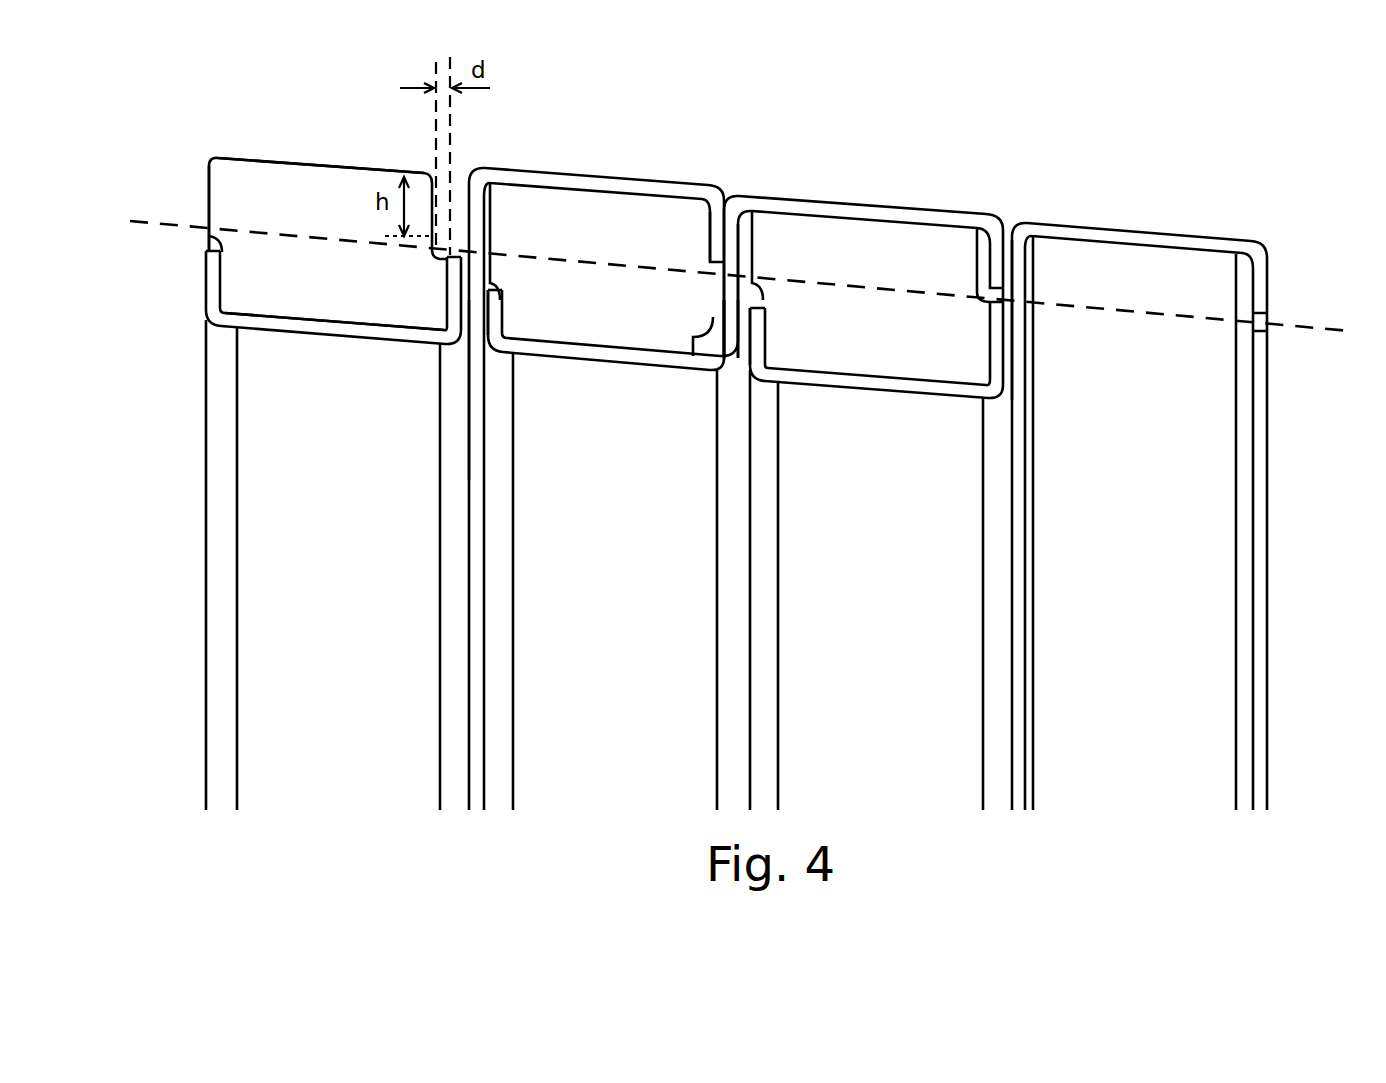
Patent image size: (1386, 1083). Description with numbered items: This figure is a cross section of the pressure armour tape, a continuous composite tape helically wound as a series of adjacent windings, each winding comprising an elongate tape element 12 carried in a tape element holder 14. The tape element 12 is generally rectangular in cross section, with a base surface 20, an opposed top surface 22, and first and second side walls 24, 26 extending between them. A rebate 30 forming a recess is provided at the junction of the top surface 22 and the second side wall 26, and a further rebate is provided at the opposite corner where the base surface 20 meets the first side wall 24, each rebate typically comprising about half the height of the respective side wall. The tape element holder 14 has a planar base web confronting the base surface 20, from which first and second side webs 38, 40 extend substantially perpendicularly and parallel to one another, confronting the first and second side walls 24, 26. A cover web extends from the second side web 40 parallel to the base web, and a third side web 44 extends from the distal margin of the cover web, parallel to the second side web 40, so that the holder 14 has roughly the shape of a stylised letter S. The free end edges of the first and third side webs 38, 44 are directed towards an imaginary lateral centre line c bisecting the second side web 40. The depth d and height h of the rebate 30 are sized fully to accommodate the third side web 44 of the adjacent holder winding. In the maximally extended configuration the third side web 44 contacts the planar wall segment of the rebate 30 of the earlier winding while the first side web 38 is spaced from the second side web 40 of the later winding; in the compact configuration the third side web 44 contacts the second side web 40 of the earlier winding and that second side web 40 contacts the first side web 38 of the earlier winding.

The tape element 12 is at (722, 484).
The tape element holder 14 is at (885, 392).
The base surface 20 is at (282, 300).
The top surface 22 is at (330, 160).
The first side wall 24 is at (208, 197).
The second side wall 26 is at (700, 330).
The rebate 30 is at (708, 268).
The first side web 38 is at (495, 305).
The second side web 40 is at (748, 246).
The third side web 44 is at (713, 187).
The imaginary lateral centre line c is at (1294, 332).